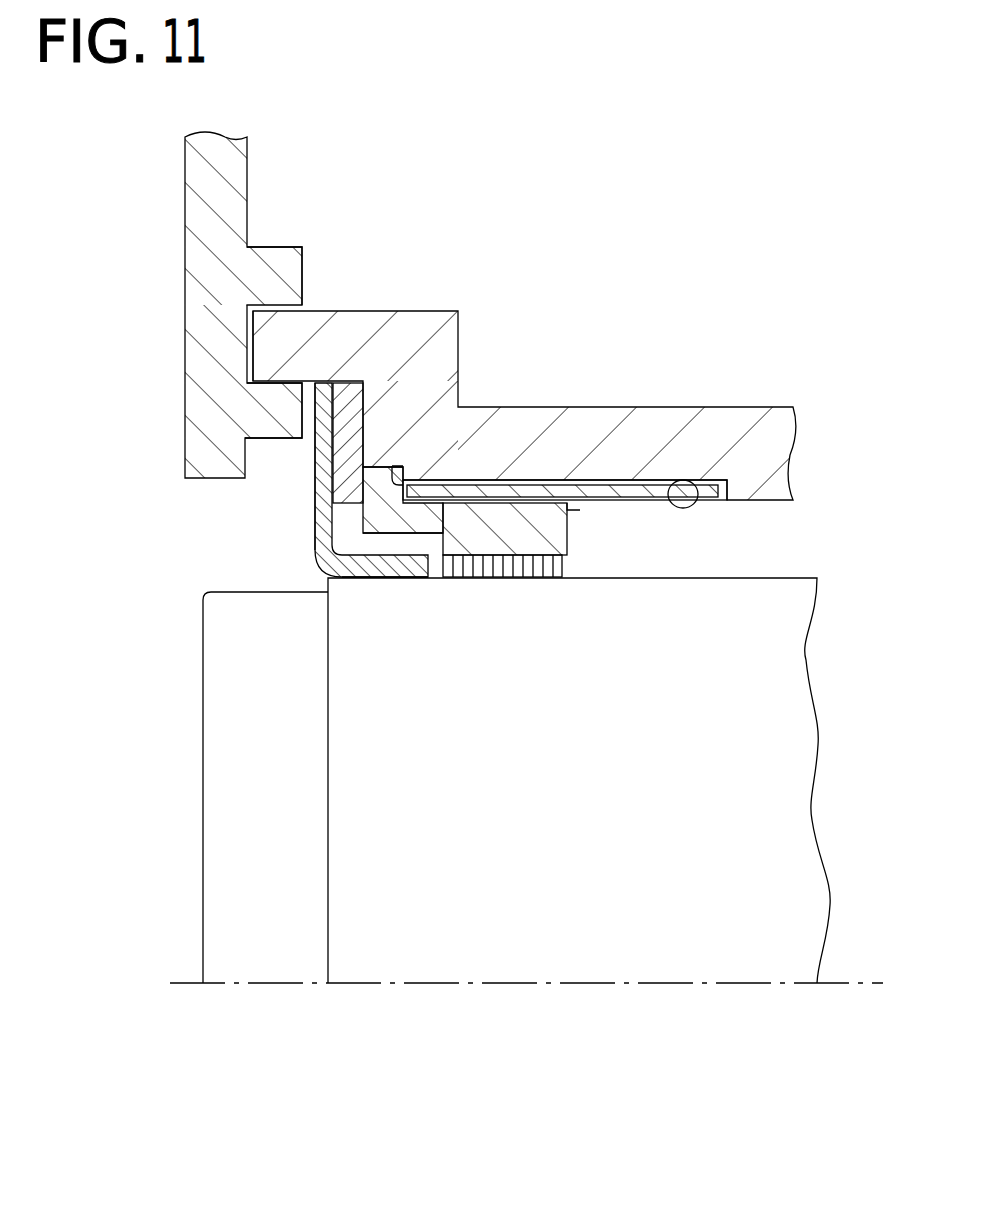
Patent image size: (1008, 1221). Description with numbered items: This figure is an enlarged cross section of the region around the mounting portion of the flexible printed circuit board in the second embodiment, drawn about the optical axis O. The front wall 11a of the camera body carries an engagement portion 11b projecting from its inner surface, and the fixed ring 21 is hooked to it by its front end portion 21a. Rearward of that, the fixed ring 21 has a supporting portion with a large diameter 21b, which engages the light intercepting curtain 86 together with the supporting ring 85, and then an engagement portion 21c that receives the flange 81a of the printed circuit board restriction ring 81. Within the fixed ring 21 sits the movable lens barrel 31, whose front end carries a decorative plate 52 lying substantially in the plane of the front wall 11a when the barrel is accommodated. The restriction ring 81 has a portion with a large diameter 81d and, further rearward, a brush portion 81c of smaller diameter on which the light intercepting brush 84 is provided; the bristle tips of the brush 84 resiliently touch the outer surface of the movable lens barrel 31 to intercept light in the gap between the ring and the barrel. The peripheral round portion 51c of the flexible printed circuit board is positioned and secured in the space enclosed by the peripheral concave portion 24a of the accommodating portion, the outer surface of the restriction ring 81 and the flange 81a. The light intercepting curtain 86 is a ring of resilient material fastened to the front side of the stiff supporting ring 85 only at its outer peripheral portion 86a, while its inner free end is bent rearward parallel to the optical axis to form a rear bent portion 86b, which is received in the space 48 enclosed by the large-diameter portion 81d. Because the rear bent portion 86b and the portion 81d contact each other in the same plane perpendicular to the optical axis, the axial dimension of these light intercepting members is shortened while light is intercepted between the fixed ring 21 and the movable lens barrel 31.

The front wall 11a is at (190, 190).
The engagement portion 11b is at (262, 342).
The fixed ring 21 is at (683, 407).
The front end portion 21a is at (267, 345).
The supporting portion with a large diameter 21b is at (267, 397).
The engagement portion 21c is at (383, 487).
The peripheral concave portion 24a is at (713, 483).
The movable lens barrel 31 is at (438, 968).
The space 48 is at (402, 547).
The peripheral round portion 51c is at (580, 500).
The decorative plate 52 is at (297, 972).
The printed circuit board restriction ring 81 is at (433, 483).
The flange 81a is at (398, 466).
The brush portion 81c is at (567, 562).
The portion with a large diameter 81d is at (545, 483).
The light intercepting brush 84 is at (545, 580).
The supporting ring 85 is at (358, 385).
The light intercepting curtain 86 is at (315, 511).
The outer peripheral portion 86a is at (315, 470).
The rear bent portion 86b is at (367, 577).
The rotation axis O is at (657, 983).